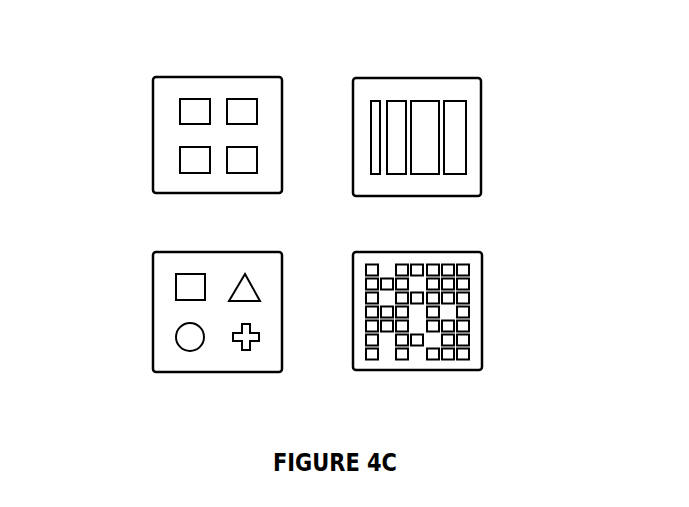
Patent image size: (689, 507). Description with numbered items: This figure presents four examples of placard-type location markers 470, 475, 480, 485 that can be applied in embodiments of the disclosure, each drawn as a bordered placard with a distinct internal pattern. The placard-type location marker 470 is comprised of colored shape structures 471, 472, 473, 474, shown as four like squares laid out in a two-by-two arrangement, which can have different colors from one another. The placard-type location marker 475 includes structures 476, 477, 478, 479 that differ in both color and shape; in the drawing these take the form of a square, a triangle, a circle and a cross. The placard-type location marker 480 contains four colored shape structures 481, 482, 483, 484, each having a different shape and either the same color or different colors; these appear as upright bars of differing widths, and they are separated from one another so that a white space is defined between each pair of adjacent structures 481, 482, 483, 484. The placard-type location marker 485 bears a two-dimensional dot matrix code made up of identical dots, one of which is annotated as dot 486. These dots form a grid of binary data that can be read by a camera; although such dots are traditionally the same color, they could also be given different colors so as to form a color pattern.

The placard-type location marker 470 is at (152, 135).
The colored shape structure 471 is at (195, 105).
The colored shape structure 472 is at (243, 106).
The colored shape structure 473 is at (188, 158).
The colored shape structure 474 is at (243, 165).
The placard-type location marker 475 is at (152, 313).
The structure 476 is at (187, 288).
The structure 477 is at (237, 290).
The structure 478 is at (193, 335).
The structure 479 is at (243, 350).
The placard-type location marker 480 is at (483, 135).
The colored shape structure 481 is at (377, 110).
The colored shape structure 482 is at (395, 110).
The colored shape structure 483 is at (425, 110).
The colored shape structure 484 is at (455, 110).
The placard-type location marker 485 is at (483, 308).
The dot 486 is at (417, 265).